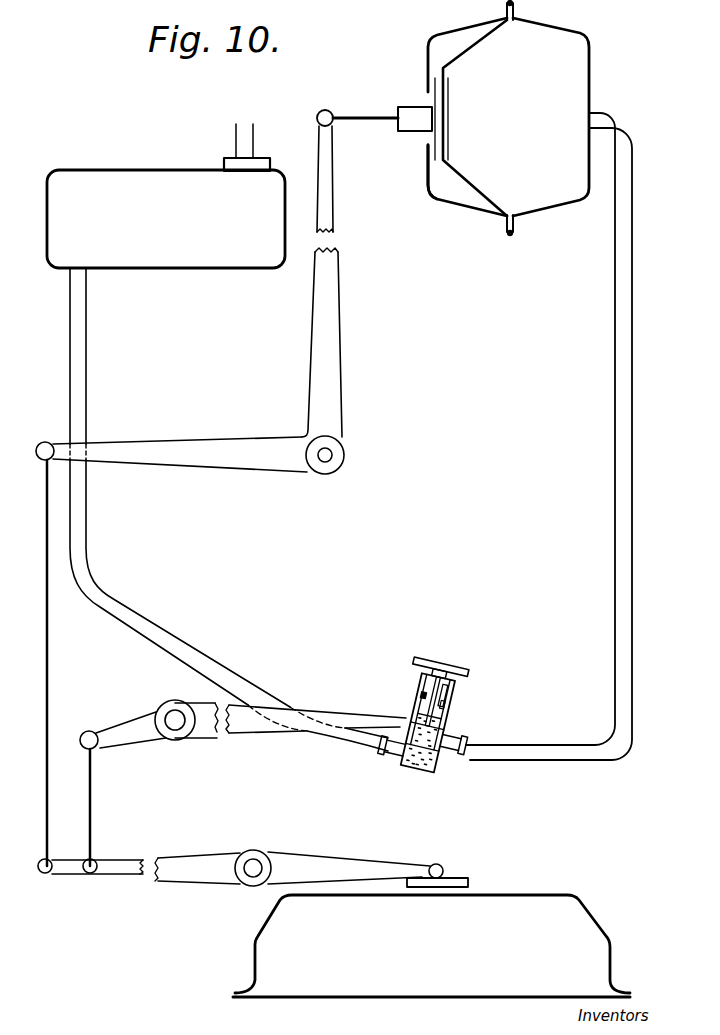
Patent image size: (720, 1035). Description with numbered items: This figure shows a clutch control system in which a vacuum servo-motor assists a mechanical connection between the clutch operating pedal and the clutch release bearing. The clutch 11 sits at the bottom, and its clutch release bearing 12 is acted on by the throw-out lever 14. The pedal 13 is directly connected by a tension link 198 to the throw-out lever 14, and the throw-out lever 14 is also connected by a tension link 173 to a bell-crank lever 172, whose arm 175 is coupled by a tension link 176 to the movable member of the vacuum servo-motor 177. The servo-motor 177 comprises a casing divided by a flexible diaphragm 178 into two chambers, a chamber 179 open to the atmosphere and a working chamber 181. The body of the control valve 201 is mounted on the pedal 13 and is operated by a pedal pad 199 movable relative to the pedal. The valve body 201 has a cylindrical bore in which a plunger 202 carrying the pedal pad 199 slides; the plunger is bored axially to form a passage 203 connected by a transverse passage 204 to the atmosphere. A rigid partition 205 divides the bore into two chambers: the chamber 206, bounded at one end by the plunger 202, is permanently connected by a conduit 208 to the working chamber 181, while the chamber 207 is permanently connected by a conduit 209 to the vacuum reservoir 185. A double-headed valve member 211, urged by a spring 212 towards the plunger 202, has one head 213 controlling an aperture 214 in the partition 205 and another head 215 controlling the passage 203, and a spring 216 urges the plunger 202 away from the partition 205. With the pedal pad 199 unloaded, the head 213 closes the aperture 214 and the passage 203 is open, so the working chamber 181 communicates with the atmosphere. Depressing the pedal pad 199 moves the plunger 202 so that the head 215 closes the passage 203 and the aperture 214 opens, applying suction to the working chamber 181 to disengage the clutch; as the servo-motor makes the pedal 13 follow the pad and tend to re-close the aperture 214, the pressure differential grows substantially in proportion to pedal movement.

The vacuum reservoir 185 is at (166, 196).
The tension link 176 is at (358, 115).
The flexible diaphragm 178 is at (467, 55).
The working chamber 181 is at (532, 144).
The chamber 179 is at (450, 188).
The vacuum servo-motor 177 is at (557, 209).
The arm 175 is at (333, 303).
The lever 172 is at (185, 448).
The conduit 208 is at (620, 393).
The conduit 209 is at (143, 610).
The tension link 173 is at (46, 655).
The clutch operating pedal 13 is at (245, 728).
The tension link 198 is at (91, 807).
The transverse passage 204 is at (413, 680).
The pedal pad 199 is at (440, 672).
The passage 203 is at (418, 707).
The plunger 202 is at (452, 692).
The valve head 215 is at (412, 725).
The chamber 206 is at (450, 718).
The spring 216 is at (447, 733).
The double-headed valve member 211 is at (407, 750).
The chamber 207 is at (400, 763).
The valve head 213 is at (417, 767).
The spring 212 is at (437, 767).
The aperture 214 is at (442, 765).
The control valve body 201 is at (447, 763).
The rigid partition 205 is at (457, 757).
The throw-out lever 14 is at (204, 866).
The clutch release bearing 12 is at (452, 873).
The clutch 11 is at (431, 946).